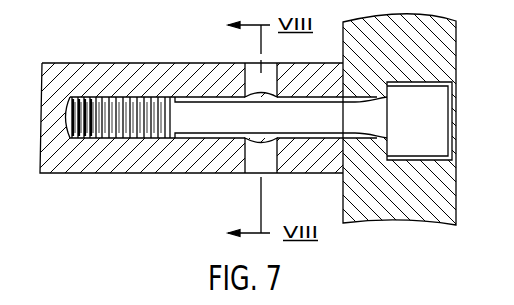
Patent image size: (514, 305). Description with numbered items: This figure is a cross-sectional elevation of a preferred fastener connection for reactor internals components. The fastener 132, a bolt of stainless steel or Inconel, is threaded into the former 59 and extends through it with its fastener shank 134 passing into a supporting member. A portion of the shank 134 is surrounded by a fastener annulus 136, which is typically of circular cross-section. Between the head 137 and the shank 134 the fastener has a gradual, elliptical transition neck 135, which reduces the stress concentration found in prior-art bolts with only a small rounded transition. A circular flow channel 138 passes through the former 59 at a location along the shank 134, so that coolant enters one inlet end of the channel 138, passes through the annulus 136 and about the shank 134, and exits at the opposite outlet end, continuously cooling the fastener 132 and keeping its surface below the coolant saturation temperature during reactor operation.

The former 59 is at (143, 68).
The fastener 132 is at (294, 124).
The fastener shank 134 is at (327, 142).
The transition neck 135 is at (364, 147).
The fastener annulus 136 is at (213, 142).
The head 137 is at (452, 103).
The flow channel 138 is at (252, 65).